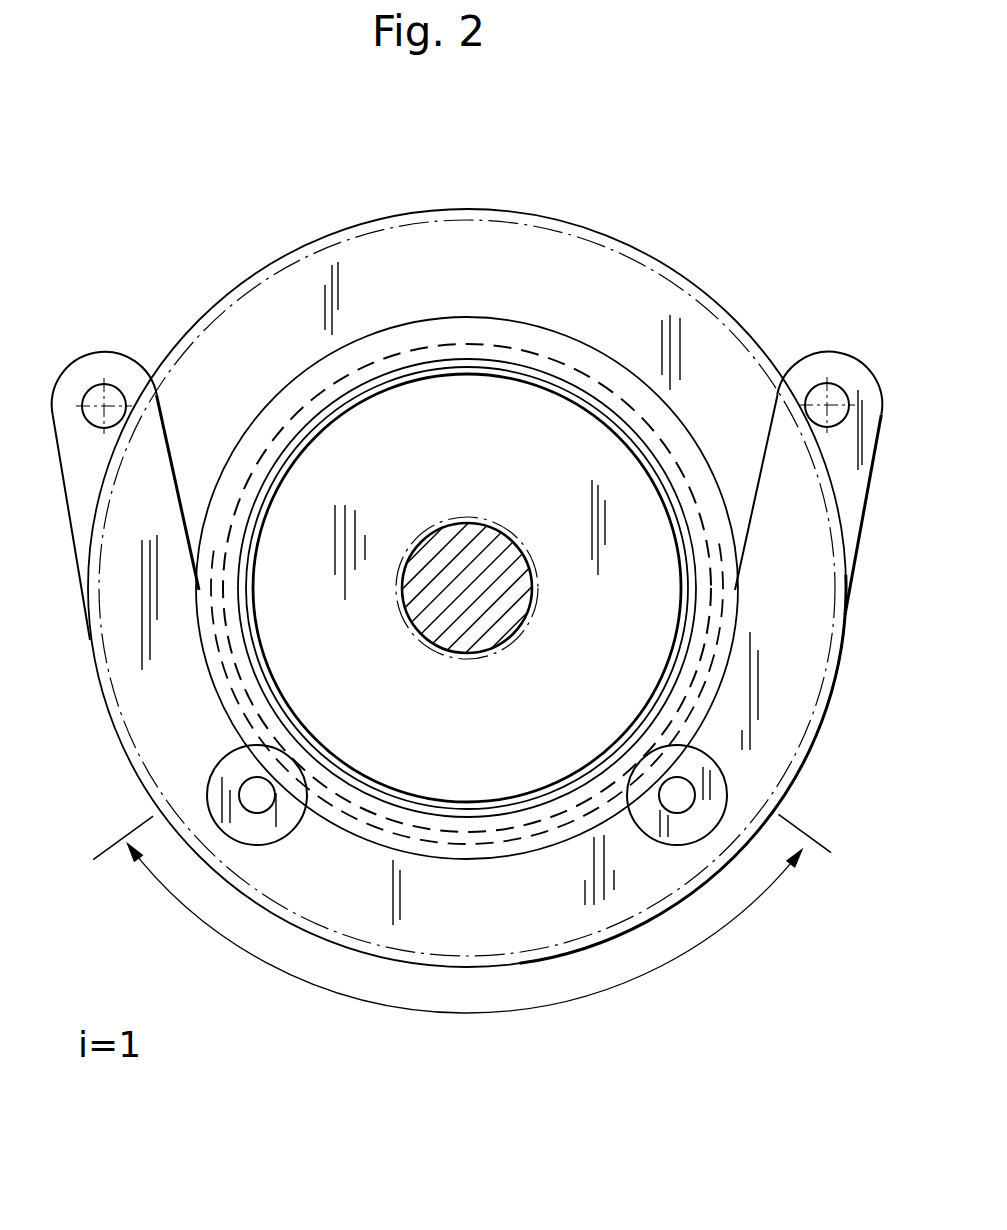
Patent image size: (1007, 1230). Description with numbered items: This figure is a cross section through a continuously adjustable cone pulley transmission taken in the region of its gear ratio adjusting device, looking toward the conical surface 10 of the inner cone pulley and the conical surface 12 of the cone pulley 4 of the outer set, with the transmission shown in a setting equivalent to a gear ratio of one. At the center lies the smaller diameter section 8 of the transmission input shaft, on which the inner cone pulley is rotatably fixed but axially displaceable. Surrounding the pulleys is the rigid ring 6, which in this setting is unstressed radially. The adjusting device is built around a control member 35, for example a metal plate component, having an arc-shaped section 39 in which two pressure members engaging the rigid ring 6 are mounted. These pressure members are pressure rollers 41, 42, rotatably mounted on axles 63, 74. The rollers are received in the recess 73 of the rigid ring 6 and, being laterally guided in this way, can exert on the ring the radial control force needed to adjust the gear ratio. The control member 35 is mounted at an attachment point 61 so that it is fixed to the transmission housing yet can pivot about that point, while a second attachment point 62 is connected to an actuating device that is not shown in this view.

The cone pulley 4 is at (708, 293).
The rigid ring 6 is at (565, 350).
The section of the transmission input shaft 8 is at (480, 547).
The conical surface 10 is at (392, 440).
The conical surface 12 is at (303, 307).
The control member 35 is at (846, 575).
The arc-shaped section 39 is at (462, 936).
The pressure roller 41 is at (707, 782).
The pressure roller 42 is at (247, 820).
The attachment point 61 is at (103, 405).
The second attachment point 62 is at (828, 404).
The axle 63 is at (257, 785).
The recess 73 is at (390, 594).
The axle 74 is at (673, 798).